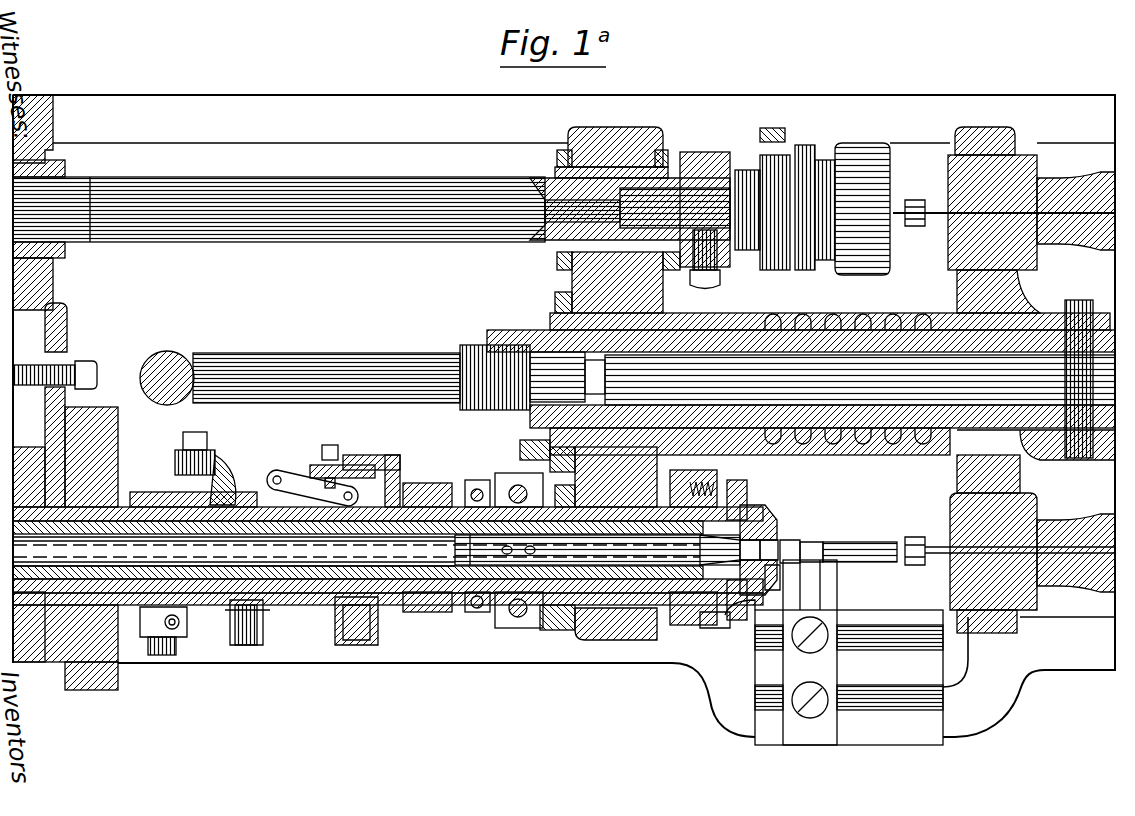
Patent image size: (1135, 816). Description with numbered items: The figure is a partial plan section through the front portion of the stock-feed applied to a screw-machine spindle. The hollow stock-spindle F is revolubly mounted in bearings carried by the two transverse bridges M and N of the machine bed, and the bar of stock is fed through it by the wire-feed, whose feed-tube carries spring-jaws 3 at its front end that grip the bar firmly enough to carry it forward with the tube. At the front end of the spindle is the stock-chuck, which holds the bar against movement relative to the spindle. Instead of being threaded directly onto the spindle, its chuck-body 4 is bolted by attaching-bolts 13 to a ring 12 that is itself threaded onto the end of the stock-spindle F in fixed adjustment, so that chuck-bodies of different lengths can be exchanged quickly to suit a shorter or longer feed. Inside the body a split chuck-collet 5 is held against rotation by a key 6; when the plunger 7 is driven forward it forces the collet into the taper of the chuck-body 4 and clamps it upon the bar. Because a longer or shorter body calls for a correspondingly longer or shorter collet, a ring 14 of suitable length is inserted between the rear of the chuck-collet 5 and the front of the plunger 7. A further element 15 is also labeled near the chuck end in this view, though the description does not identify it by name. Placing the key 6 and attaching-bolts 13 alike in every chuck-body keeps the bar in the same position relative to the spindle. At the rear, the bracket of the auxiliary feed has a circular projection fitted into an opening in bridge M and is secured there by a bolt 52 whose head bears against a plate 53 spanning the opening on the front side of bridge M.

The transverse bridge M is at (53, 278).
The transverse bridge N is at (590, 280).
The stock-spindle F is at (290, 595).
The plate 53 is at (68, 325).
The bolt 52 is at (78, 360).
The plunger 7 is at (433, 520).
The ring 14 is at (620, 527).
The spring cap 15 is at (735, 500).
The chuck-body 4 is at (748, 525).
The spring-jaws 3 is at (745, 535).
The chuck-collet 5 is at (770, 530).
The key 6 is at (780, 540).
The ring 12 is at (678, 628).
The attaching-bolts 13 is at (722, 628).